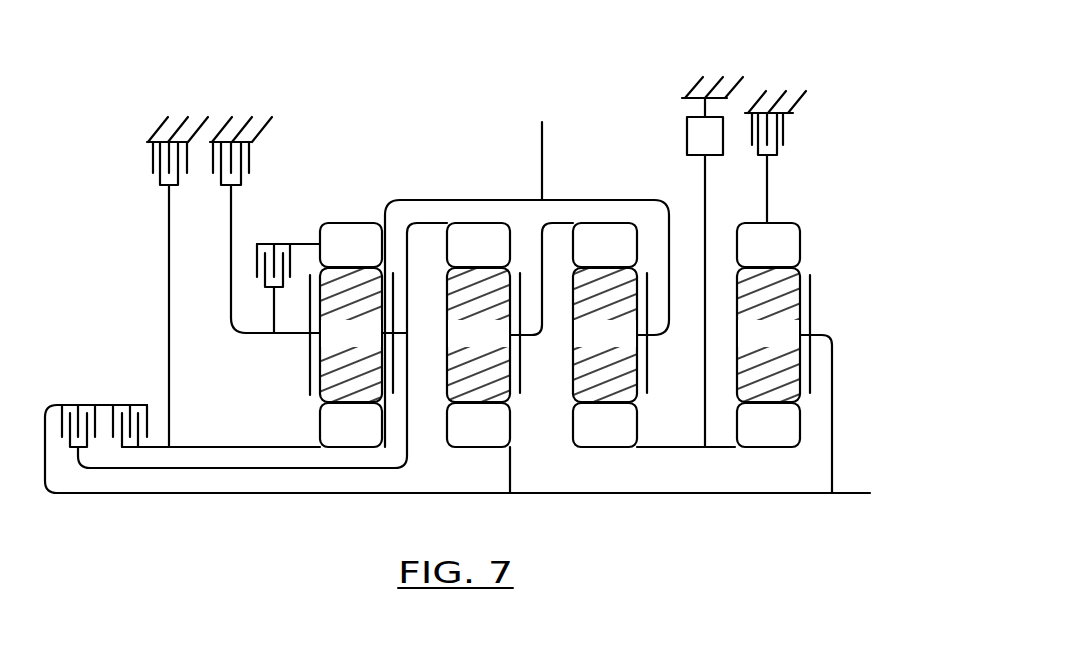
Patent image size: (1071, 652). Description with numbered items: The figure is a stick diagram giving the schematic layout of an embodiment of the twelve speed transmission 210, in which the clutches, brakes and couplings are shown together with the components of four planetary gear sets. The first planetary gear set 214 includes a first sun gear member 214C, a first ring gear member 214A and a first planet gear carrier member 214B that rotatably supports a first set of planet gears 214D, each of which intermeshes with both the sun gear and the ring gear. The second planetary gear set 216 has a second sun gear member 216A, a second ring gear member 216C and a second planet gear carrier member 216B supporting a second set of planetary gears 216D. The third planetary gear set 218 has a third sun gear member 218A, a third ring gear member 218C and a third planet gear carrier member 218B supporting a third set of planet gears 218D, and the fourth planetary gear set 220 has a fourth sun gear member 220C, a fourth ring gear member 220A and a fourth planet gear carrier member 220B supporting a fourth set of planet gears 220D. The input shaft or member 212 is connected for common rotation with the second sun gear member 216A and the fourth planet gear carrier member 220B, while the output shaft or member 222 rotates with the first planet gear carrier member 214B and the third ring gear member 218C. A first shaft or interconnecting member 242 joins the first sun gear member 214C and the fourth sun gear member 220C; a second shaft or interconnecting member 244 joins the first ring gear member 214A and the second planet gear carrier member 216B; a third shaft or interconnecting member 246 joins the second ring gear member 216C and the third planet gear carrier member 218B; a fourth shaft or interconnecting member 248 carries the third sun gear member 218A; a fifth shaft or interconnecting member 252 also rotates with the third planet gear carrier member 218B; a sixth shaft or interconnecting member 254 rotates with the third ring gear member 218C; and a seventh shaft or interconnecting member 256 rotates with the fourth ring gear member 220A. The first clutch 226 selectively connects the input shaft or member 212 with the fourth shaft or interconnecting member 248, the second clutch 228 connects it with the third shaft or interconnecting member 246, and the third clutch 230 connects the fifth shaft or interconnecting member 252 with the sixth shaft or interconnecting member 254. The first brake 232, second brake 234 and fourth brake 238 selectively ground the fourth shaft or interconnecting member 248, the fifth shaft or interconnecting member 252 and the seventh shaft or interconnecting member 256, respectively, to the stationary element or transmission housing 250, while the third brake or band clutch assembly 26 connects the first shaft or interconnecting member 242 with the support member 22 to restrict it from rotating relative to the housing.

The twelve speed transmission 210 is at (733, 50).
The input shaft or member 212 is at (842, 495).
The output shaft or member 222 is at (538, 137).
The support member 22 is at (685, 88).
The third brake or band clutch assembly 26 is at (685, 130).
The stationary element or transmission housing 250 is at (807, 98).
The first planetary gear set 214 is at (603, 449).
The first ring gear member 214A is at (632, 259).
The first planet gear carrier member 214B is at (650, 378).
The first sun gear member 214C is at (632, 439).
The first set of planet gears 214D is at (632, 346).
The second planetary gear set 216 is at (474, 449).
The second sun gear member 216A is at (505, 439).
The second planet gear carrier member 216B is at (522, 380).
The second ring gear member 216C is at (505, 259).
The second set of planetary gears 216D is at (505, 346).
The third planetary gear set 218 is at (343, 449).
The third sun gear member 218A is at (377, 439).
The third planet gear carrier member 218B is at (390, 297).
The third ring gear member 218C is at (377, 259).
The third set of planet gears 218D is at (377, 346).
The fourth planetary gear set 220 is at (763, 449).
The fourth ring gear member 220A is at (795, 259).
The fourth planet gear carrier member 220B is at (812, 315).
The fourth sun gear member 220C is at (795, 439).
The fourth set of planet gears 220D is at (795, 346).
The first clutch 226 is at (148, 420).
The second clutch 228 is at (97, 418).
The third clutch 230 is at (257, 263).
The first brake 232 is at (152, 167).
The second brake 234 is at (250, 165).
The fourth brake 238 is at (787, 133).
The first shaft or interconnecting member 242 is at (680, 448).
The second shaft or interconnecting member 244 is at (540, 303).
The third shaft or interconnecting member 246 is at (410, 410).
The fourth shaft or interconnecting member 248 is at (215, 448).
The fifth shaft or interconnecting member 252 is at (229, 300).
The sixth shaft or interconnecting member 254 is at (297, 245).
The seventh shaft or interconnecting member 256 is at (770, 192).